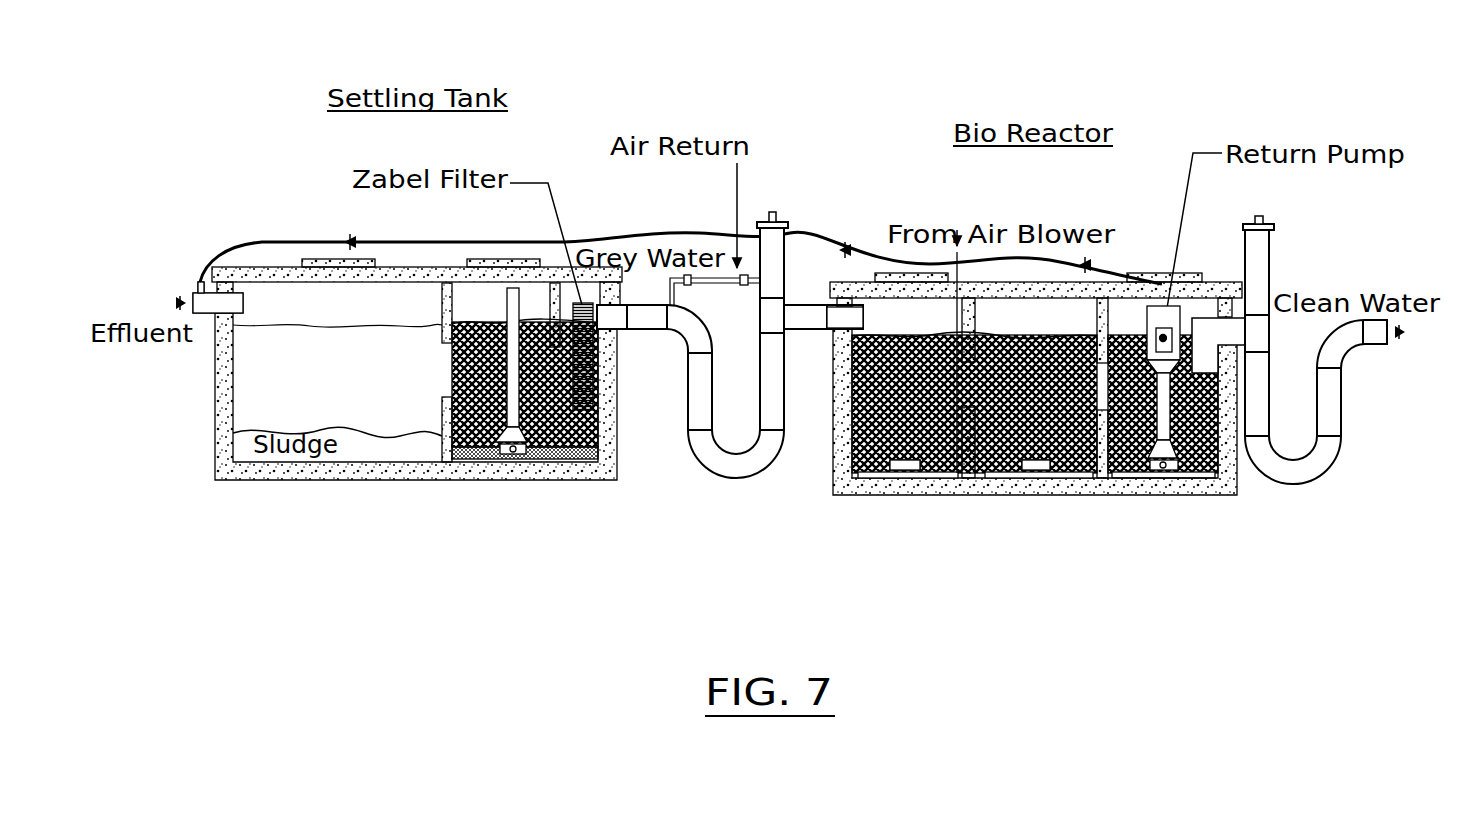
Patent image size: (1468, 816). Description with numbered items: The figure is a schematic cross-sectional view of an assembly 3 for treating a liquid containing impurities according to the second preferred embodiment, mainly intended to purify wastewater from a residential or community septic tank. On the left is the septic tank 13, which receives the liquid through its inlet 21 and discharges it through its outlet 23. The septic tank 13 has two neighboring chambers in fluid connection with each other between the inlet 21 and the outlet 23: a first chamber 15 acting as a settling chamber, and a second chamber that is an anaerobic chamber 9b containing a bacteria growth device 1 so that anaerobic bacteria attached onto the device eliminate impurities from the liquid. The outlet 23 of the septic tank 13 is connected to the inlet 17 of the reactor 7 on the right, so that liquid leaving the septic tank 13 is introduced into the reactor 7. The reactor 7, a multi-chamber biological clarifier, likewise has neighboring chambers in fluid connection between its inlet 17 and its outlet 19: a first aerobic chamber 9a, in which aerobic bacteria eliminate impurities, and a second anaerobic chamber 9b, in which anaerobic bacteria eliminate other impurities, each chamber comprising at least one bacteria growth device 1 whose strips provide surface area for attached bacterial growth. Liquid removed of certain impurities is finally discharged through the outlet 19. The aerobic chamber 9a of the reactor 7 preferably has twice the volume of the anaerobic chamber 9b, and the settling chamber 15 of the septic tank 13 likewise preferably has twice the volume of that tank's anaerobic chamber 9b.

The assembly 3 is at (983, 60).
The septic tank 13 is at (256, 484).
The first chamber 15 is at (355, 314).
The anaerobic chamber 9b is at (495, 319).
The aerobic chamber 9a is at (1047, 330).
The bacteria growth device 1 is at (488, 435).
The inlet 21 is at (200, 290).
The outlet 23 is at (615, 322).
The inlet 17 is at (838, 330).
The outlet 19 is at (1226, 333).
The reactor 7 is at (1192, 499).